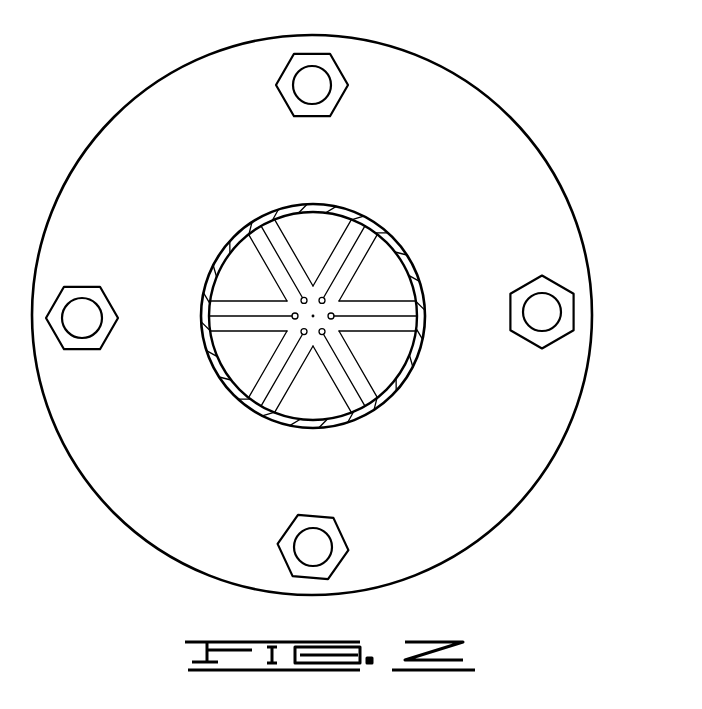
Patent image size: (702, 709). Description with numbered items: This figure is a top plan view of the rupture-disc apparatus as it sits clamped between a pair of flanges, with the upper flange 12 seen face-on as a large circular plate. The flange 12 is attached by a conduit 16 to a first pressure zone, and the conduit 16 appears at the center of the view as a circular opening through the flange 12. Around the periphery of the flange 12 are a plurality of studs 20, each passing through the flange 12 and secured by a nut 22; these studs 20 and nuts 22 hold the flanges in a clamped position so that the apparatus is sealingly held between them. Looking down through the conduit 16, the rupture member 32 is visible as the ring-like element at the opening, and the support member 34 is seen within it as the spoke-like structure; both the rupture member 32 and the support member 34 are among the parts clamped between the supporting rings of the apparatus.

The flange 12 is at (480, 125).
The conduit 16 is at (413, 268).
The stud 20 is at (317, 87).
The nut 22 is at (335, 70).
The rupture member 32 is at (370, 229).
The support member 34 is at (392, 288).